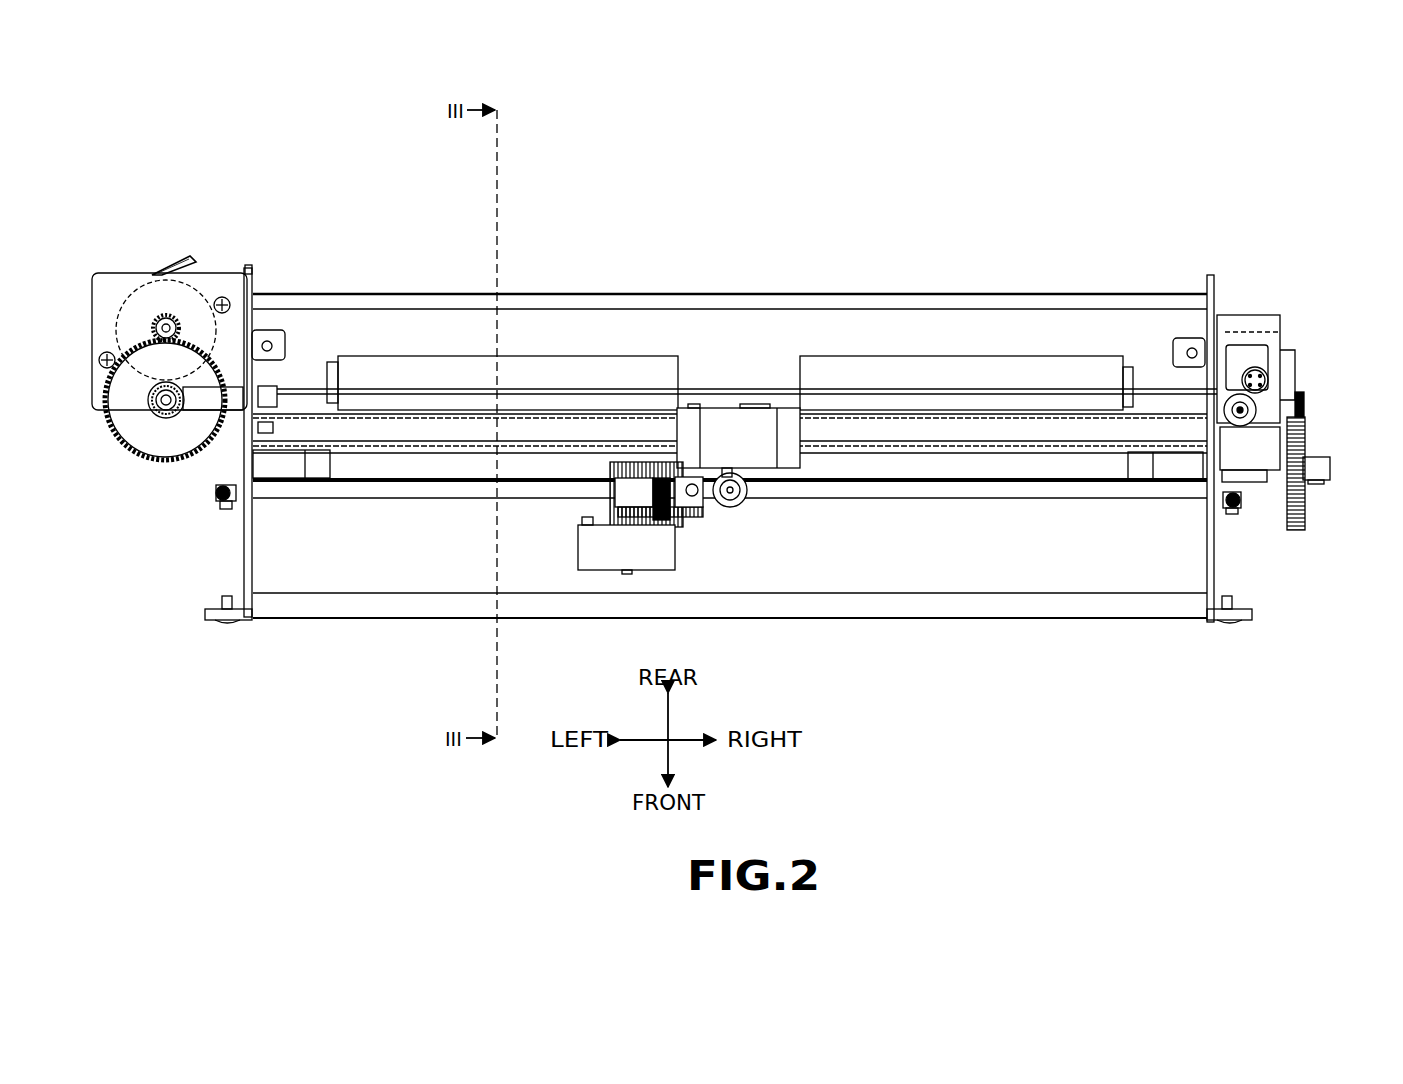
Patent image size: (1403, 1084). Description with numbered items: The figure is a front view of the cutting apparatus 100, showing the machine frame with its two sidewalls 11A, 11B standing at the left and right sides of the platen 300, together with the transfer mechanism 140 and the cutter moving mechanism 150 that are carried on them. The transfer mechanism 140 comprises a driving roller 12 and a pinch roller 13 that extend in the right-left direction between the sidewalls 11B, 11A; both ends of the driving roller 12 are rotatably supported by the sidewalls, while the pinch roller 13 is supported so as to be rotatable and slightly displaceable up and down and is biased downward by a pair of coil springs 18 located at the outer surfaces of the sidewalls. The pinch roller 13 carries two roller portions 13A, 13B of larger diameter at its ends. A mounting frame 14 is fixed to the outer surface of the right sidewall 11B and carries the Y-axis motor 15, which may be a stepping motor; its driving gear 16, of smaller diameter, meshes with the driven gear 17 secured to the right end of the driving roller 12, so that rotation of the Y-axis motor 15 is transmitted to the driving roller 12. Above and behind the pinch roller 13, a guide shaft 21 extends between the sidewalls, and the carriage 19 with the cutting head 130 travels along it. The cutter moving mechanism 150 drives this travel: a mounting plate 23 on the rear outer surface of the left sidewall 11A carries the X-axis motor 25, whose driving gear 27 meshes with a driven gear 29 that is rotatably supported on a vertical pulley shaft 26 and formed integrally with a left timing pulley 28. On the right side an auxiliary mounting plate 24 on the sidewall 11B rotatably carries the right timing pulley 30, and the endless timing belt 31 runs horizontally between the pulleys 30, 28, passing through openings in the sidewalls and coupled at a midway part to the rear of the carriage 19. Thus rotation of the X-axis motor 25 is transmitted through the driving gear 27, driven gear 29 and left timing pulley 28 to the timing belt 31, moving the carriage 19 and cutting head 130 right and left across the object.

The cutting apparatus 100 is at (1230, 170).
The cutter moving mechanism 150 is at (228, 246).
The mounting plate 23 is at (121, 272).
The X-axis motor 25 is at (144, 275).
The driving gear 27 is at (156, 327).
The pulley shaft 26 is at (153, 400).
The driven gear 29 is at (130, 428).
The left timing pulley 28 is at (162, 412).
The coil springs 18 is at (217, 499).
The left sidewall 11A is at (243, 561).
The right sidewall 11B is at (1215, 570).
The roller portion 13A is at (318, 470).
The roller portion 13B is at (1141, 474).
The pinch roller 13 is at (1010, 470).
The platen 300 is at (327, 602).
The timing belt 31 is at (383, 386).
The guide shaft 21 is at (922, 432).
The carriage 19 is at (733, 428).
The cutting head 130 is at (728, 542).
The Y-axis motor 15 is at (1248, 332).
The mounting frame 14 is at (1282, 315).
The driving gear 16 is at (1300, 393).
The auxiliary mounting plate 24 is at (1305, 402).
The right timing pulley 30 is at (1302, 422).
The driven gear 17 is at (1297, 532).
The transfer mechanism 140 is at (1322, 496).
The driving roller 12 is at (1250, 483).